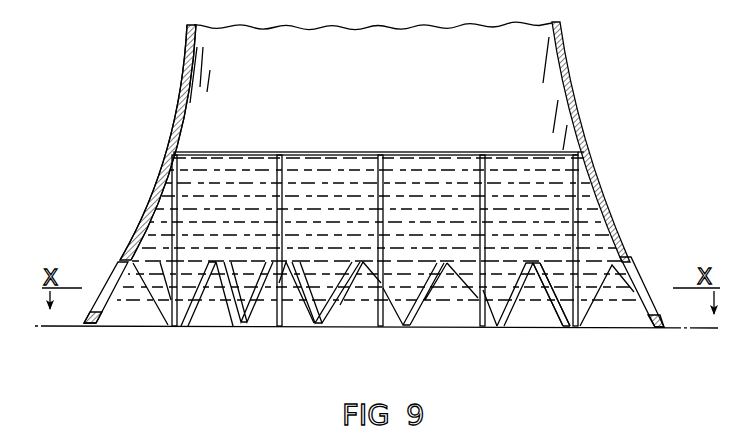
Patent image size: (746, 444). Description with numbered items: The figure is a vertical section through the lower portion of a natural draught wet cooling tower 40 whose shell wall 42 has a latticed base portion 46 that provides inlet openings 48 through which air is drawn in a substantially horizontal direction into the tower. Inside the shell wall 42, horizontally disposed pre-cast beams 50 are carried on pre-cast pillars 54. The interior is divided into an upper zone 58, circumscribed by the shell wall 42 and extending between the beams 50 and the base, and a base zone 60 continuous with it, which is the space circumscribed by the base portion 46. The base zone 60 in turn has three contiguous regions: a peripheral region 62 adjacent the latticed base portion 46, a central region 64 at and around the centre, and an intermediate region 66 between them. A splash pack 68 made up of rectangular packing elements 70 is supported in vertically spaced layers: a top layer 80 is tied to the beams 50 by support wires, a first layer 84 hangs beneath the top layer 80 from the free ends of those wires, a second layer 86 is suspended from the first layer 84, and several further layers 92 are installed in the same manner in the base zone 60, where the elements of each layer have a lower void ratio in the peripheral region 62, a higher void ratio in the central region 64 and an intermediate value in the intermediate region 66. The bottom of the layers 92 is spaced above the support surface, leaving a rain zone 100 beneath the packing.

The natural draught wet cooling tower 40 is at (637, 37).
The shell wall 42 is at (581, 127).
The base portion 46 is at (653, 282).
The inlet openings 48 is at (161, 262).
The pre-cast beams 50 is at (489, 148).
The pre-cast pillars 54 is at (276, 178).
The upper zone 58 is at (551, 194).
The base zone 60 is at (561, 282).
The peripheral region 62 is at (205, 284).
The central region 64 is at (416, 297).
The intermediate region 66 is at (298, 300).
The splash pack 68 is at (155, 171).
The packing elements 70 is at (214, 288).
The top layer 80 is at (159, 146).
The first layer 84 is at (585, 157).
The second layer 86 is at (150, 181).
The layers 92 is at (178, 278).
The rain zone 100 is at (521, 318).